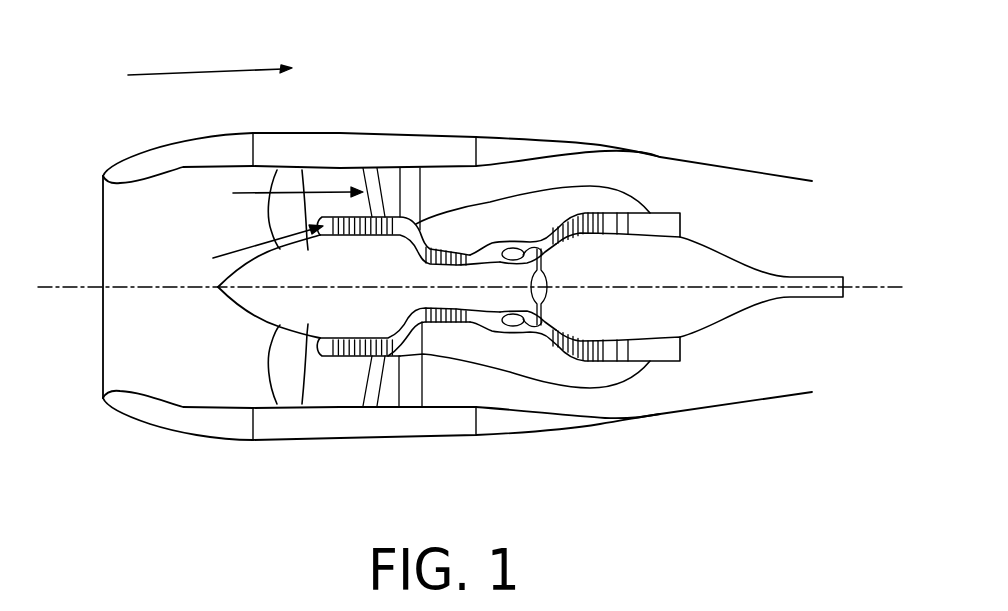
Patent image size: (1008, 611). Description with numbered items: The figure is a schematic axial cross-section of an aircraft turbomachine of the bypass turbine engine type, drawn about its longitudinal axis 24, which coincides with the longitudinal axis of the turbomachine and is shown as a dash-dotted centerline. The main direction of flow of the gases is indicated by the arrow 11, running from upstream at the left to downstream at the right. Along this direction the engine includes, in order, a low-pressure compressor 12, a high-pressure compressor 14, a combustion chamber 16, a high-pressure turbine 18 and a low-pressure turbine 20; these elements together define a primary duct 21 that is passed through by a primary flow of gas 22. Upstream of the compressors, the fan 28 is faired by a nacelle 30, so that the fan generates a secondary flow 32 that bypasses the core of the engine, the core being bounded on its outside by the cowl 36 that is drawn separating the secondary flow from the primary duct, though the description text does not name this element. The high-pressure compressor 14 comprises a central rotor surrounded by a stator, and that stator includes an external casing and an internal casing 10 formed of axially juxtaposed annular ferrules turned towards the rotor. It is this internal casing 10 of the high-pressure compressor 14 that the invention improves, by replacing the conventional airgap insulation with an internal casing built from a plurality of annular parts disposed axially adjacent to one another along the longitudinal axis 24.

The internal casing 10 is at (473, 238).
The arrow 11 is at (213, 67).
The low-pressure compressor 12 is at (350, 353).
The high-pressure compressor 14 is at (467, 323).
The combustion chamber 16 is at (503, 330).
The high-pressure turbine 18 is at (557, 357).
The low-pressure turbine 20 is at (607, 350).
The primary duct 21 is at (407, 243).
The primary flow of gas 22 is at (233, 248).
The longitudinal axis 24 is at (48, 287).
The fan 28 is at (290, 393).
The nacelle 30 is at (283, 131).
The secondary flow 32 is at (247, 197).
The core cowl 36 is at (417, 232).